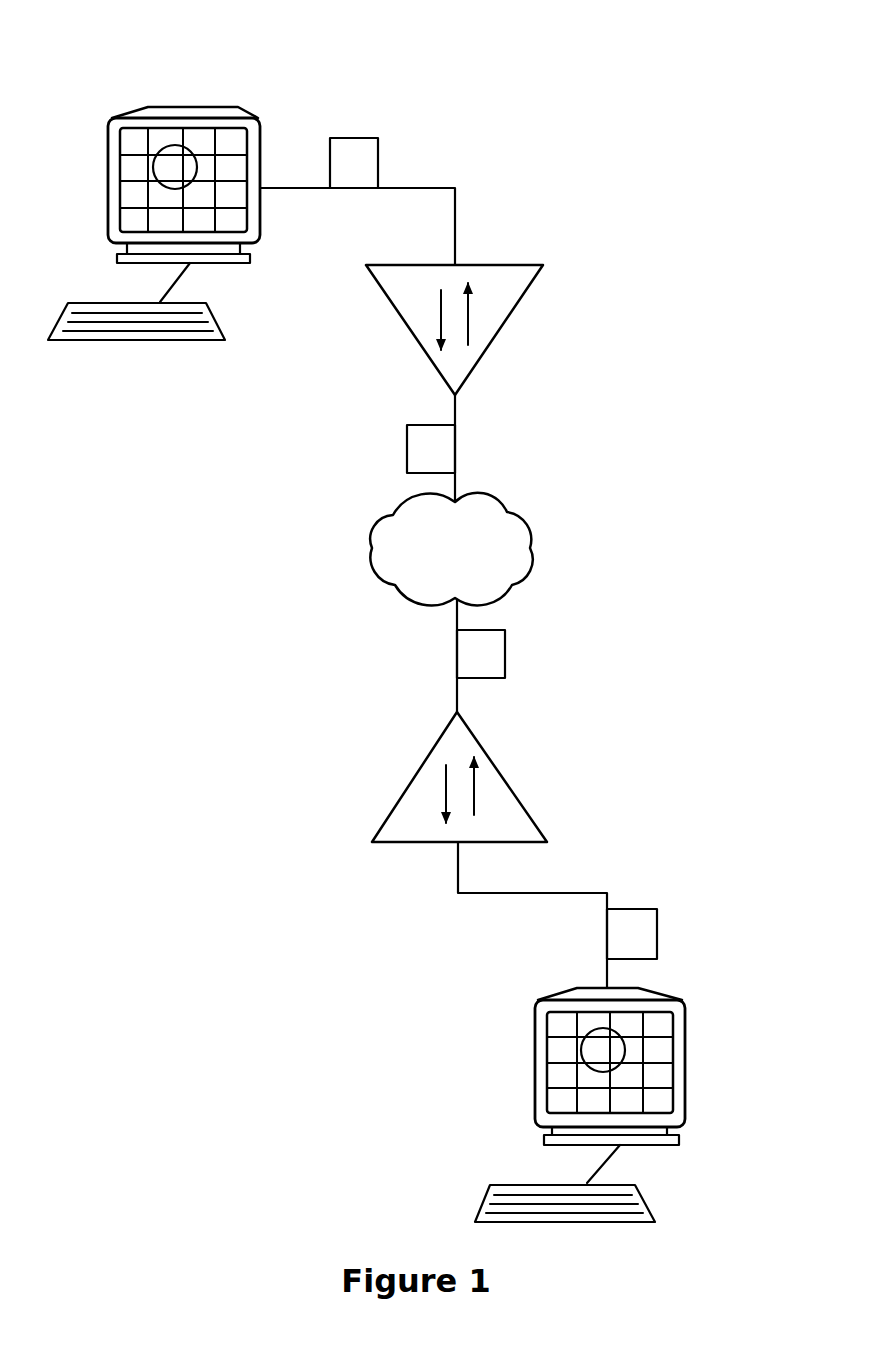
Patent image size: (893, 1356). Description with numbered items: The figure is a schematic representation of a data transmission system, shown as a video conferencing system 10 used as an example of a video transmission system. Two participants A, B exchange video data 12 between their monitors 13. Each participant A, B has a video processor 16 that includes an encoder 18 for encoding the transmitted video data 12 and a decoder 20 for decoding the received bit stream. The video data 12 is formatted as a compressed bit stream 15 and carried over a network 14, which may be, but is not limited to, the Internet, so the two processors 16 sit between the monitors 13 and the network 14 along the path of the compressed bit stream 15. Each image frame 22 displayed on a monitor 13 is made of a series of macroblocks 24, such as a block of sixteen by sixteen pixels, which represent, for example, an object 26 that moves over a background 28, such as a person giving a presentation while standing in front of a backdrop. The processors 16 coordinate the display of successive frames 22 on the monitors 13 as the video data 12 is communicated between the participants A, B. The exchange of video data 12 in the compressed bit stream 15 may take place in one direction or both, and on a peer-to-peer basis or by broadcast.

The video conferencing system 10 is at (545, 203).
The video data 12 is at (493, 548).
The monitor 13 is at (168, 104).
The network 14 is at (451, 549).
The compressed bit stream 15 is at (456, 551).
The video processor 16 is at (555, 288).
The encoder 18 is at (441, 312).
The decoder 20 is at (468, 310).
The image frame 22 is at (118, 193).
The macroblock 24 is at (133, 143).
The object 26 is at (192, 147).
The background 28 is at (235, 142).
The participant A is at (123, 83).
The participant B is at (470, 1065).